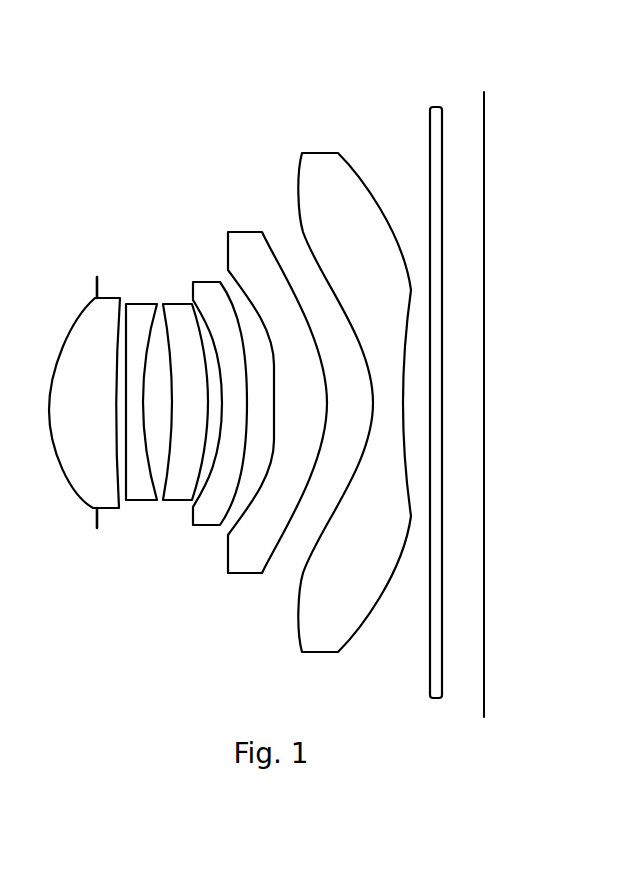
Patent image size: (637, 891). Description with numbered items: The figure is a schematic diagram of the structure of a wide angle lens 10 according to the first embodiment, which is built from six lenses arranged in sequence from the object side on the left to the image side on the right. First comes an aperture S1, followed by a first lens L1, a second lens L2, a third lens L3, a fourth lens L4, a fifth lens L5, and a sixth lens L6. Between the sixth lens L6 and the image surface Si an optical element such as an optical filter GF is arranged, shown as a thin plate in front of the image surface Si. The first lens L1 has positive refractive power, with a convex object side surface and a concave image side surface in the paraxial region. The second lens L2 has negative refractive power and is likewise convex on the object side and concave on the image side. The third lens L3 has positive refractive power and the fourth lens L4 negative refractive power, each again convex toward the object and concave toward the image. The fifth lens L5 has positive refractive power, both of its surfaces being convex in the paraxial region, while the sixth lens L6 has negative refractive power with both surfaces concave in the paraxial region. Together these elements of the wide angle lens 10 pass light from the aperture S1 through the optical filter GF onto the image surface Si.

The wide angle lens 10 is at (245, 37).
The aperture S1 is at (96, 391).
The first lens L1 is at (85, 390).
The second lens L2 is at (141, 390).
The third lens L3 is at (185, 390).
The fourth lens L4 is at (220, 390).
The fifth lens L5 is at (277, 389).
The sixth lens L6 is at (354, 388).
The optical filter GF is at (437, 387).
The image surface Si is at (483, 389).